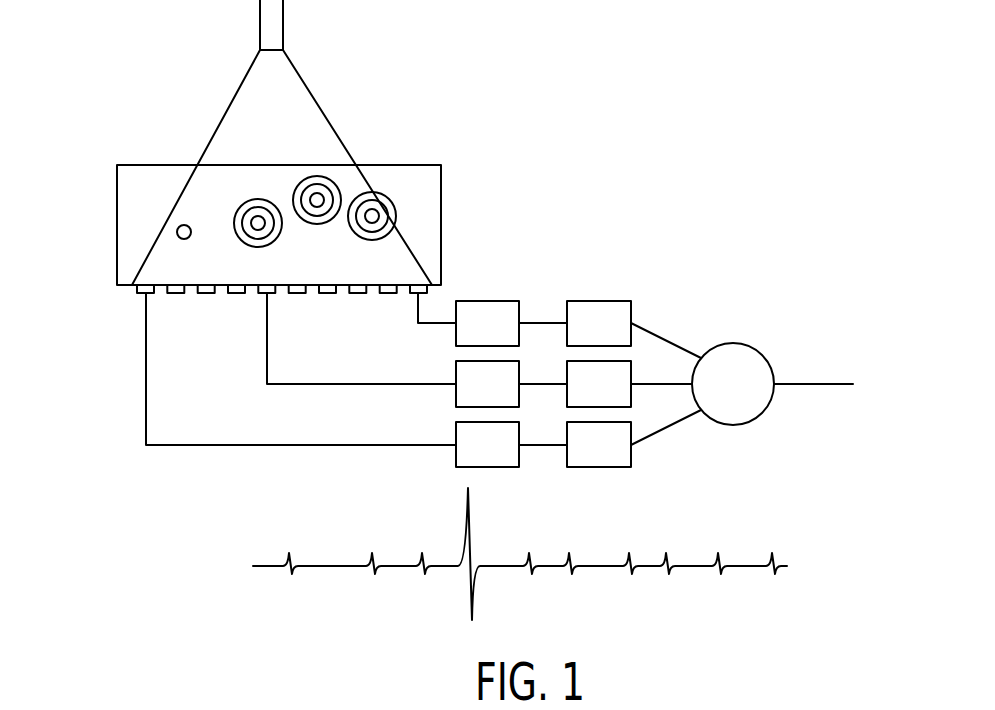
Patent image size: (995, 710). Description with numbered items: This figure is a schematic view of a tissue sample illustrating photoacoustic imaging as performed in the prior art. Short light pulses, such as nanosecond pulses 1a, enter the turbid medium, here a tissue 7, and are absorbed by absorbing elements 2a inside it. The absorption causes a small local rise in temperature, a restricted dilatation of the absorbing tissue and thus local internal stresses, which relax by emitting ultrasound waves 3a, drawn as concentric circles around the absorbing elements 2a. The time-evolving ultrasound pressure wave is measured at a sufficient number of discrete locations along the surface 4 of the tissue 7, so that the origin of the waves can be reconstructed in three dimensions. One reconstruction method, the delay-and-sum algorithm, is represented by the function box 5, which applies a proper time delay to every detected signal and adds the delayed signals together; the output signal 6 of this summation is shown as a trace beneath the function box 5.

The nanosecond pulses 1a is at (346, 29).
The absorbing elements 2a is at (177, 232).
The ultrasound waves 3a is at (258, 223).
The surface 4 is at (246, 314).
The function box 5 is at (722, 282).
The output signal 6 is at (664, 527).
The tissue 7 is at (122, 258).